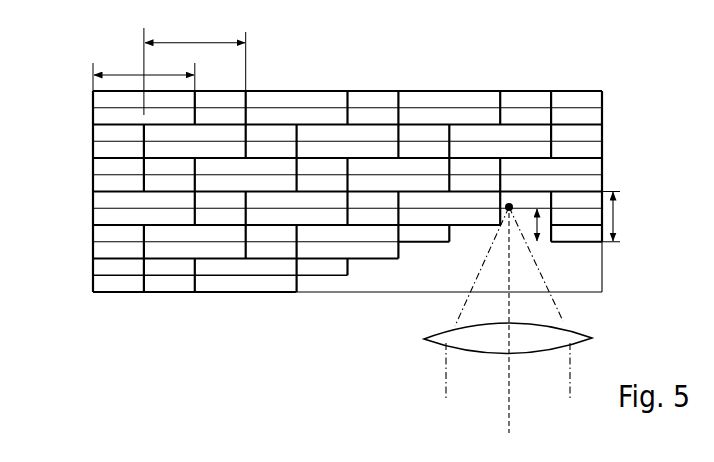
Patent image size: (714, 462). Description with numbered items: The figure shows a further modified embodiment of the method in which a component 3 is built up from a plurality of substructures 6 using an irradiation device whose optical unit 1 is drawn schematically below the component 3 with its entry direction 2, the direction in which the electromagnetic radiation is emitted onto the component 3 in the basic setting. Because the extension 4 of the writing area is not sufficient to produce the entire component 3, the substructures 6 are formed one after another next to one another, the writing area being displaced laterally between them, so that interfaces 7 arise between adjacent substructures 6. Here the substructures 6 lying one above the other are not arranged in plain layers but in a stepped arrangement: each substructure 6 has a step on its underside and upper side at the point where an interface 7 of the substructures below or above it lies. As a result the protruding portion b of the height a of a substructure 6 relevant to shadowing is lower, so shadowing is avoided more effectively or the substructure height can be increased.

The optical unit 1 is at (419, 352).
The entry direction 2 is at (508, 413).
The component 3 is at (54, 56).
The extension of the writing area 4 is at (169, 67).
The substructure 6 is at (422, 172).
The interface 7 is at (247, 126).
The height of a substructure a is at (620, 216).
The protruding portion b is at (528, 225).